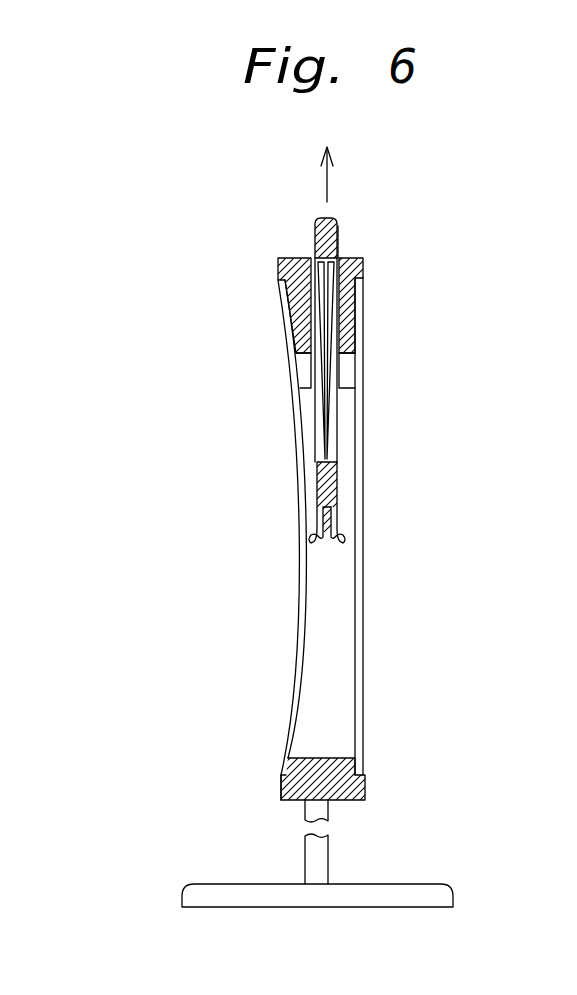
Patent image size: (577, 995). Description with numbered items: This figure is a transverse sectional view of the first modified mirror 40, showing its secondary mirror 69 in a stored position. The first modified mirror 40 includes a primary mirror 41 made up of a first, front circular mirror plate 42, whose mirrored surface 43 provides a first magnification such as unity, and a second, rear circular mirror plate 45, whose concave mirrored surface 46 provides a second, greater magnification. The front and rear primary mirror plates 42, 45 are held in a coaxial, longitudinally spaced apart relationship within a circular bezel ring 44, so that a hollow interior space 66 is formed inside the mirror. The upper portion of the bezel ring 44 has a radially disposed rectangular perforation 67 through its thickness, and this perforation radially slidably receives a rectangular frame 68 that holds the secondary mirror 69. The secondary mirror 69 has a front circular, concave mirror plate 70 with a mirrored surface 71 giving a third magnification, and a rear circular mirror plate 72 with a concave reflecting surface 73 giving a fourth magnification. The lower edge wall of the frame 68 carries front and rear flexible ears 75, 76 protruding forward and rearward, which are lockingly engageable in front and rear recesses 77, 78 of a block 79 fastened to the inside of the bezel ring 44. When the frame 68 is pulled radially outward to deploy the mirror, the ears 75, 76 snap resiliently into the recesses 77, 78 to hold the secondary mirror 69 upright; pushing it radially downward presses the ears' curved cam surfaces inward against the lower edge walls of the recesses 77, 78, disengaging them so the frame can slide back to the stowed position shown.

The first modified mirror 40 is at (212, 180).
The primary mirror 41 is at (359, 246).
The front circular mirror plate 42 is at (364, 650).
The mirrored surface 43 is at (368, 583).
The bezel ring 44 is at (293, 257).
The rear circular mirror plate 45 is at (290, 747).
The concave mirrored surface 46 is at (290, 700).
The hollow interior space 66 is at (351, 682).
The rectangular perforation 67 is at (339, 226).
The rectangular frame 68 is at (346, 240).
The secondary mirror 69 is at (306, 255).
The front circular concave mirror plate 70 is at (403, 360).
The mirrored surface 71 is at (332, 404).
The rear circular mirror plate 72 is at (254, 360).
The concave reflecting surface 73 is at (322, 402).
The front flexible ear 75 is at (342, 536).
The rear flexible ear 76 is at (315, 537).
The front recess 77 is at (350, 366).
The rear recess 78 is at (305, 377).
The block 79 is at (352, 393).